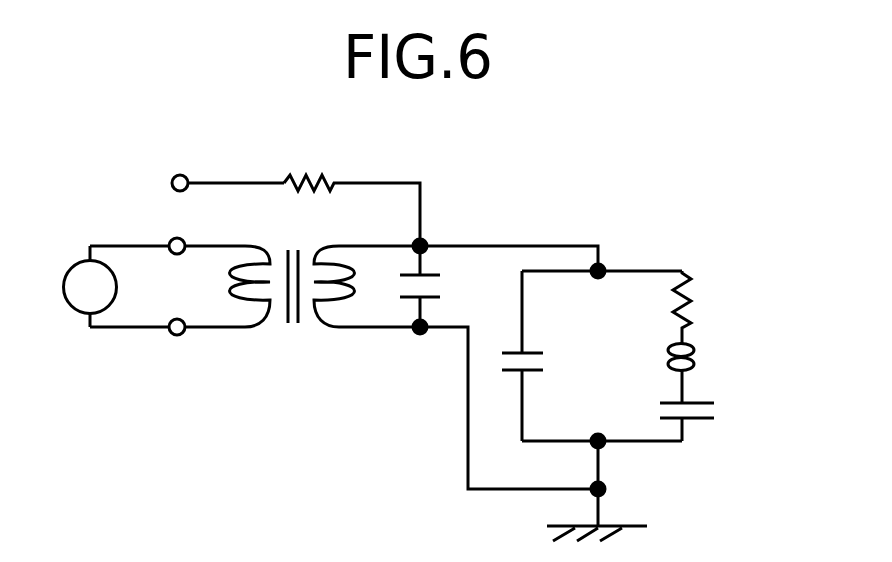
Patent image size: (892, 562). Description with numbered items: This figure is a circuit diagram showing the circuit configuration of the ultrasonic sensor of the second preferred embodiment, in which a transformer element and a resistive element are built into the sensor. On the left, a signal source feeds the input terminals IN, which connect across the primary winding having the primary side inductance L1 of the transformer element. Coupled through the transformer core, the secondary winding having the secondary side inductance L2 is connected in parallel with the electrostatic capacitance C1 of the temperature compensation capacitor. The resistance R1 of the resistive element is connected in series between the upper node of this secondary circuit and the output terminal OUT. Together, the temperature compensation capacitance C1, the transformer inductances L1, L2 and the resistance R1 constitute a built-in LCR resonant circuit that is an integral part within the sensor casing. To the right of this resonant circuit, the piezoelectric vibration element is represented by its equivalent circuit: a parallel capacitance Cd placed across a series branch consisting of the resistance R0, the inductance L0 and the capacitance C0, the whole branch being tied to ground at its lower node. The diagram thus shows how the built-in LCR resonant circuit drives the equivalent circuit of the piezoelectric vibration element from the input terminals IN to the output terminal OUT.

The input terminals with signal source IN is at (155, 268).
The output terminal OUT is at (217, 163).
The resistance of resistive element R1 is at (352, 190).
The primary side inductance L1 is at (250, 311).
The secondary side inductance L2 is at (367, 311).
The electrostatic capacitance of temperature compensation capacitor C1 is at (441, 286).
The equivalent circuit capacitance of piezoelectric vibration element Cd is at (549, 356).
The equivalent circuit resistance of piezoelectric vibration element R0 is at (713, 306).
The equivalent circuit inductance of piezoelectric vibration element L0 is at (711, 371).
The equivalent circuit capacitance of piezoelectric vibration element C0 is at (707, 421).